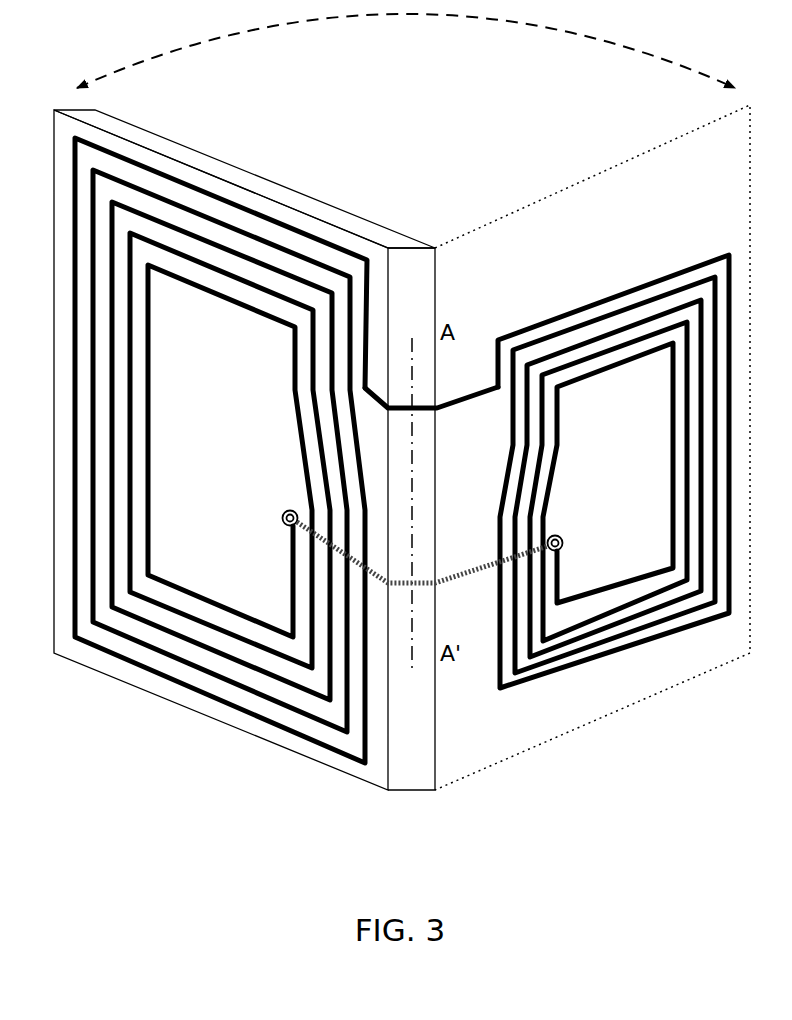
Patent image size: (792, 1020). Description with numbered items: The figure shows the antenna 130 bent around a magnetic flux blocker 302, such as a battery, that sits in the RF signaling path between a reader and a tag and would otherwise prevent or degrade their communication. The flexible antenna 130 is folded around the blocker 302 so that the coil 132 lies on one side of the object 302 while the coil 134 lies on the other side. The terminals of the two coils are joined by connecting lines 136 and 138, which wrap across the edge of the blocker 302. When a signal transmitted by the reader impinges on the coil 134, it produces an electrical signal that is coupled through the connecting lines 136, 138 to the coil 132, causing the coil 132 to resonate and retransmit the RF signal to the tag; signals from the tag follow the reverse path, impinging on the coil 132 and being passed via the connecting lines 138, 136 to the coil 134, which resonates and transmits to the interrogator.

The magnetic flux blocker 302 is at (257, 192).
The antenna 130 is at (195, 697).
The coil 132 is at (150, 430).
The coil 134 is at (545, 430).
The connecting line 136 is at (455, 578).
The connecting line 138 is at (473, 390).